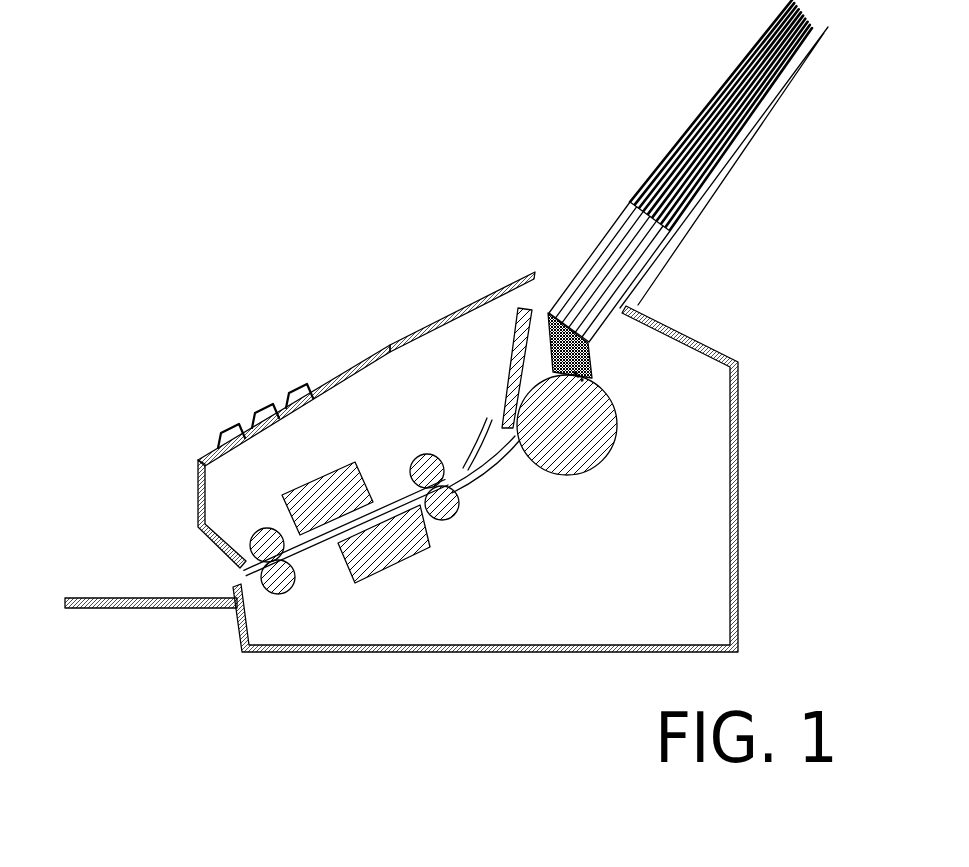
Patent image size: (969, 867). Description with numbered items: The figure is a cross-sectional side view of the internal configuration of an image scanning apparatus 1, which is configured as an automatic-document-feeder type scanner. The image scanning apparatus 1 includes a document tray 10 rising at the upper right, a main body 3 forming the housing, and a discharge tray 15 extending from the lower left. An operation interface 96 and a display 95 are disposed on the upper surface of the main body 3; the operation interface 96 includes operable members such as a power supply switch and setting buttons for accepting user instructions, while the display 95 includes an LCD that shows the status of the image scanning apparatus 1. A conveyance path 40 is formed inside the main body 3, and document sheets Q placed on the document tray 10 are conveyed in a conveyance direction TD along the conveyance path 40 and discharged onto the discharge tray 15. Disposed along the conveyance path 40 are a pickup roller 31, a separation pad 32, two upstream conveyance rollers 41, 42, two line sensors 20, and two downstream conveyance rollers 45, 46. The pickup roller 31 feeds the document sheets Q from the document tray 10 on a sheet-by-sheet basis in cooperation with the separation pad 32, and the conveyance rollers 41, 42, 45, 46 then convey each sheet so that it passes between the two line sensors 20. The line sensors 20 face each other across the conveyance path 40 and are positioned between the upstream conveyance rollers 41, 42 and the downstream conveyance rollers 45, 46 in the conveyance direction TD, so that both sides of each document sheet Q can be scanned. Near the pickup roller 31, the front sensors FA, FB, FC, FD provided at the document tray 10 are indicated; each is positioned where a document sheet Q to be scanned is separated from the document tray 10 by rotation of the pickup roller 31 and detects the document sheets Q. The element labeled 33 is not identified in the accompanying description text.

The image scanning apparatus 1 is at (360, 222).
The main body 3 is at (357, 364).
The document tray 10 is at (771, 113).
The discharge tray 15 is at (100, 606).
The line sensor 20 is at (337, 471).
The pickup roller 31 is at (592, 468).
The separation pad 32 is at (515, 365).
The sheet tray 33 is at (583, 268).
The conveyance path 40 is at (467, 460).
The upstream conveyance roller 41 is at (456, 516).
The upstream conveyance roller 42 is at (423, 453).
The downstream conveyance roller 45 is at (272, 595).
The downstream conveyance roller 46 is at (253, 533).
The display 95 is at (437, 300).
The operation interface 96 is at (244, 395).
The document sheet Q is at (648, 183).
The conveyance direction TD is at (403, 473).
The first front sensor FA is at (582, 380).
The second front sensor FB is at (578, 376).
The third front sensor FC is at (576, 373).
The fourth front sensor FD is at (575, 373).